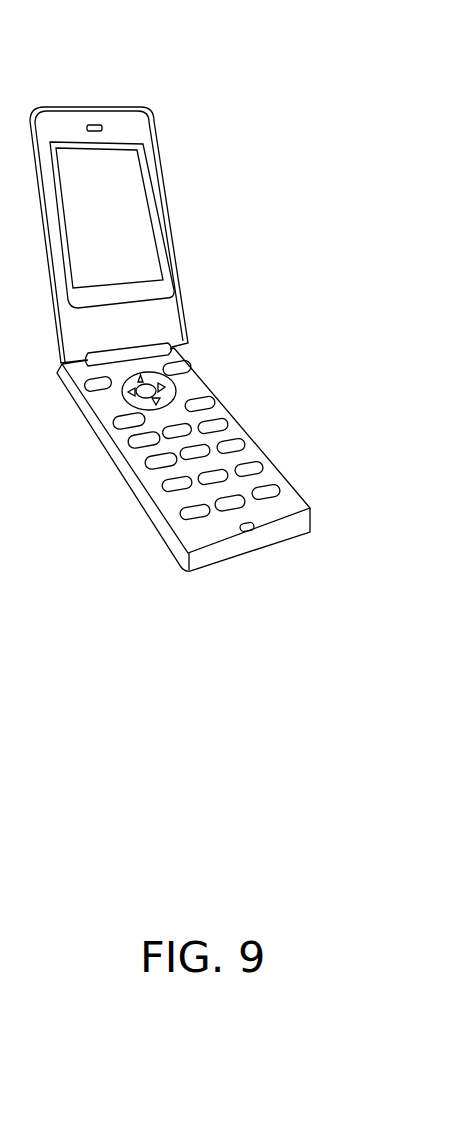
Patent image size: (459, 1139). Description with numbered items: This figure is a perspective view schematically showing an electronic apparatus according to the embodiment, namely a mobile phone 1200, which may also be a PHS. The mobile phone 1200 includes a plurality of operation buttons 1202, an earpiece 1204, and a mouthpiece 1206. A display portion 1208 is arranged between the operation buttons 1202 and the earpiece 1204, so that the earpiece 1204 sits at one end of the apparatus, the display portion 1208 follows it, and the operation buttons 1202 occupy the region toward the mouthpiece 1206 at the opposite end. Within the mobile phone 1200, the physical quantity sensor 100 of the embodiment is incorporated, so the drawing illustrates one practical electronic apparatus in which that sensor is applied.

The mobile phone 1200 is at (199, 291).
The physical quantity sensor 100 is at (212, 455).
The operation buttons 1202 is at (218, 422).
The earpiece 1204 is at (97, 123).
The mouthpiece 1206 is at (252, 522).
The display portion 1208 is at (137, 212).